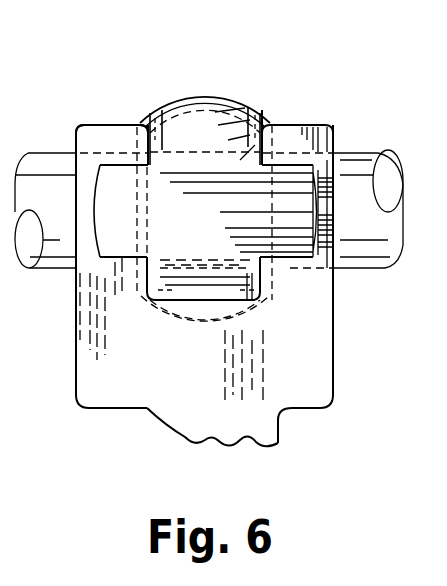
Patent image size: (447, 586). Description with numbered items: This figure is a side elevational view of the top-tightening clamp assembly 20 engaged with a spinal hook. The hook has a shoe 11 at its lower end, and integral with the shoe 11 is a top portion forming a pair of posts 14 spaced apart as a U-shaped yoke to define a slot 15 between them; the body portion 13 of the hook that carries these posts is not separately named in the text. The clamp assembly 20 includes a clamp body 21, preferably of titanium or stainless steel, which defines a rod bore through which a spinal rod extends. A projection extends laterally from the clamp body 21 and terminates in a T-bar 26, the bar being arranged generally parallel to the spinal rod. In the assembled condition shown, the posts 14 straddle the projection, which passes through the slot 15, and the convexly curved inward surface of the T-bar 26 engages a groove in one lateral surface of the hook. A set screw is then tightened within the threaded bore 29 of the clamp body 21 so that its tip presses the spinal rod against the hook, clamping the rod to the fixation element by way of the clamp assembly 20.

The shoe 11 is at (278, 425).
The body 13 is at (335, 302).
The posts 14 is at (85, 135).
The slot 15 is at (150, 120).
The top-tightening clamp assembly 20 is at (262, 104).
The clamp body 21 is at (233, 95).
The T-bar 26 is at (110, 243).
The threaded bore 29 is at (187, 96).